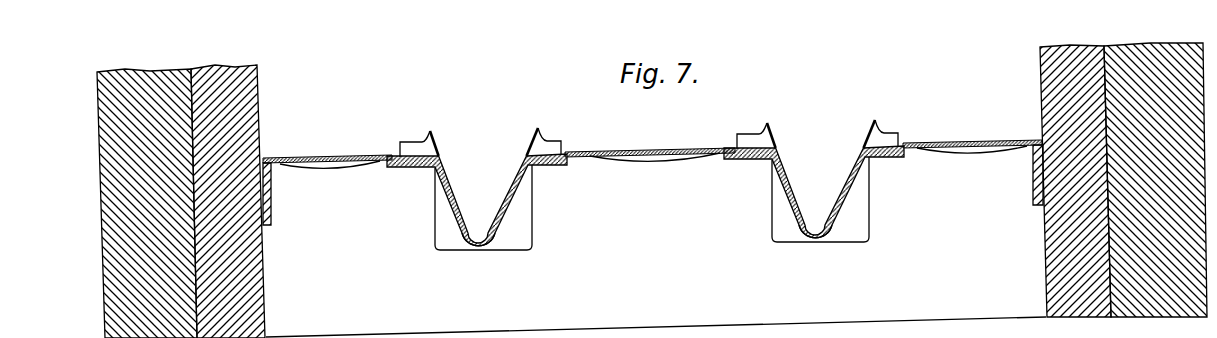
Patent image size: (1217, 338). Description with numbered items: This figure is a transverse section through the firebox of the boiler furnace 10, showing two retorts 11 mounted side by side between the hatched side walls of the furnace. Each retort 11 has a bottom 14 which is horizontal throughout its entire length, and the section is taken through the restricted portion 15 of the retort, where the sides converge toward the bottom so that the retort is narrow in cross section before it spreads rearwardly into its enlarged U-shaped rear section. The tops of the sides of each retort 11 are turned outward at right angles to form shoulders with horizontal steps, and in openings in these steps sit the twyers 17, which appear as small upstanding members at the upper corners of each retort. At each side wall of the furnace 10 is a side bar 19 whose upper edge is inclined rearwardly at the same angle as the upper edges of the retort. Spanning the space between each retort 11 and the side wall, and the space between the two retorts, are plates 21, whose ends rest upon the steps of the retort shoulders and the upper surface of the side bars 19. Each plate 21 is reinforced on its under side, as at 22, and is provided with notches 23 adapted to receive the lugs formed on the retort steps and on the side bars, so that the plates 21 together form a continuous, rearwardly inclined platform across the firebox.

The boiler furnace 10 is at (285, 113).
The retort 11 is at (442, 221).
The bottom of the retort 14 is at (515, 251).
The restricted portion of the retort 15 is at (481, 251).
The twyer 17 is at (410, 145).
The side bar 19 is at (272, 208).
The plate 21 is at (667, 141).
The reinforcement 22 is at (662, 159).
The notch 23 is at (958, 159).